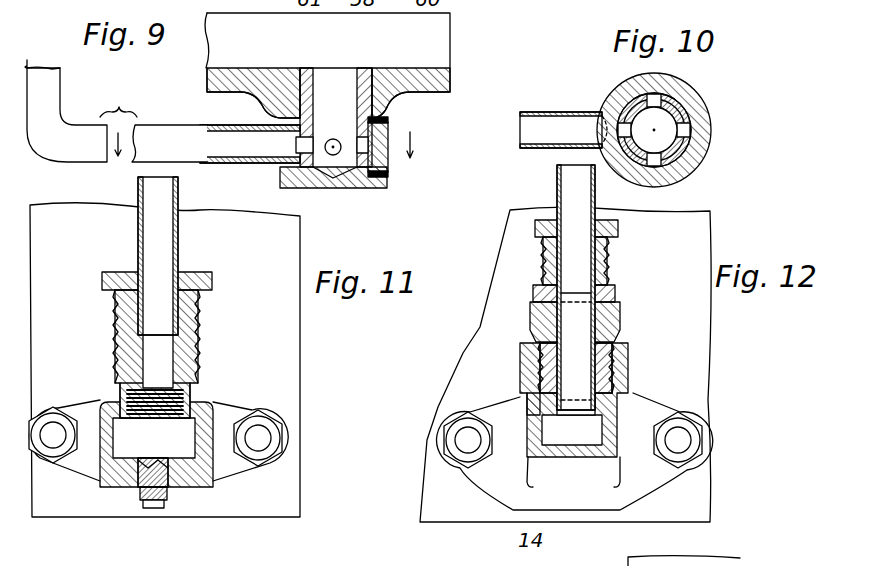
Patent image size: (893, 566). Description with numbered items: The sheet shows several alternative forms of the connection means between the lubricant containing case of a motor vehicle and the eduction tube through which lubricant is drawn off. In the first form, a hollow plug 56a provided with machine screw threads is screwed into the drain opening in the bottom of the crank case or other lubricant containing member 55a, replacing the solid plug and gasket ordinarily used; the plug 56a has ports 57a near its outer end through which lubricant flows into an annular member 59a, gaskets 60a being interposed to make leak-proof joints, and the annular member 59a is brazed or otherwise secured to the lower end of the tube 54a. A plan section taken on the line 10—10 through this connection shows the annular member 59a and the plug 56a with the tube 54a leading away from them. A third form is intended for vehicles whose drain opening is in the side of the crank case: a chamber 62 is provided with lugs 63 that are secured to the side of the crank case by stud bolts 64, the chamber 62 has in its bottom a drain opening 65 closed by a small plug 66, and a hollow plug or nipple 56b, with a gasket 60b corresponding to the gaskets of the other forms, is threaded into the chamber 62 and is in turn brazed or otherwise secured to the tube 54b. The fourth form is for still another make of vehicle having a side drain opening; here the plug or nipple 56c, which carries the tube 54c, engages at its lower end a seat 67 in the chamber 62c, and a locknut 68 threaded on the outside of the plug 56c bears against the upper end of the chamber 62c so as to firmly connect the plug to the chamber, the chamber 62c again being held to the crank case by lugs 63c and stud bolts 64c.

In FIG. 9, the section line 10 is at (260, 134).
In FIG. 9, the tube 54a is at (48, 103).
In FIG. 10, the tube 54a is at (550, 112).
In FIG. 9, the lubricant containing member 55a is at (374, 68).
In FIG. 9, the hollow plug 56a is at (306, 68).
In FIG. 10, the hollow plug 56a is at (713, 152).
In FIG. 9, the ports 57a is at (307, 146).
In FIG. 10, the ports 57a is at (698, 182).
In FIG. 9, the annular member 59a is at (393, 147).
In FIG. 10, the annular member 59a is at (713, 121).
In FIG. 9, the gaskets 60a is at (393, 119).
In FIG. 11, the tube 54b is at (178, 248).
In FIG. 11, the hollow plug or nipple 56b is at (199, 336).
In FIG. 11, the gasket 60b is at (213, 288).
In FIG. 11, the chamber 62 is at (120, 456).
In FIG. 11, the lugs 63 is at (233, 410).
In FIG. 11, the stud bolts 64 is at (52, 422).
In FIG. 11, the drain opening 65 is at (172, 468).
In FIG. 11, the small plug 66 is at (156, 508).
In FIG. 12, the tube 54c is at (557, 184).
In FIG. 12, the plug or nipple 56c is at (619, 315).
In FIG. 12, the chamber 62c is at (623, 378).
In FIG. 12, the lugs 63c is at (648, 410).
In FIG. 12, the stud bolts 64c is at (698, 446).
In FIG. 12, the seat 67 is at (535, 420).
In FIG. 12, the locknut 68 is at (617, 288).